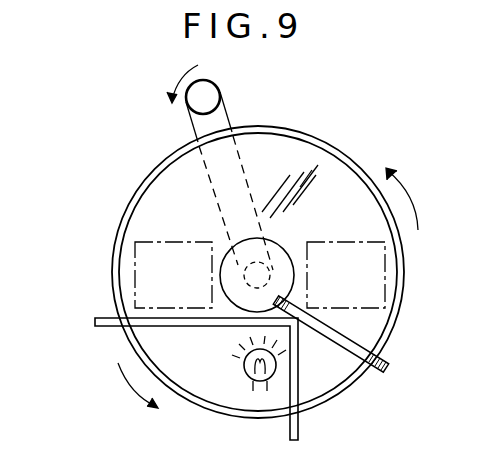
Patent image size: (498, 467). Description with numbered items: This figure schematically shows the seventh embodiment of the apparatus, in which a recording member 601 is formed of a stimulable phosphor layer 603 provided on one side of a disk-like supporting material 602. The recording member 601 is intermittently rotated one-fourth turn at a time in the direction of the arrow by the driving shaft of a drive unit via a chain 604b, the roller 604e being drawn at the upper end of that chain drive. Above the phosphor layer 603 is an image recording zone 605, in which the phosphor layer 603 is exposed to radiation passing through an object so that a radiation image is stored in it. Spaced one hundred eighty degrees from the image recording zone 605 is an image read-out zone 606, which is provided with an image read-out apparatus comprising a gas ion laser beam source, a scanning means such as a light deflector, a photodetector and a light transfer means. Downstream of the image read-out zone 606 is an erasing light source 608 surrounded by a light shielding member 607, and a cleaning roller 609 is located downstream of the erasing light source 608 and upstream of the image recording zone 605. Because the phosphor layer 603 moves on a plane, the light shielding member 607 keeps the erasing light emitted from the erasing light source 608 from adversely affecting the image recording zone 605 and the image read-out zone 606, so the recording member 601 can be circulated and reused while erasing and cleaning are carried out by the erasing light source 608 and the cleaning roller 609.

The recording member 601 is at (320, 123).
The disk-like supporting material 602 is at (338, 152).
The stimulable phosphor layer 603 is at (348, 188).
The chain 604b is at (190, 128).
The roller 604e is at (208, 96).
The image recording zone 605 is at (385, 288).
The image read-out zone 606 is at (135, 292).
The light shielding member 607 is at (103, 326).
The erasing light source 608 is at (240, 371).
The cleaning roller 609 is at (362, 343).